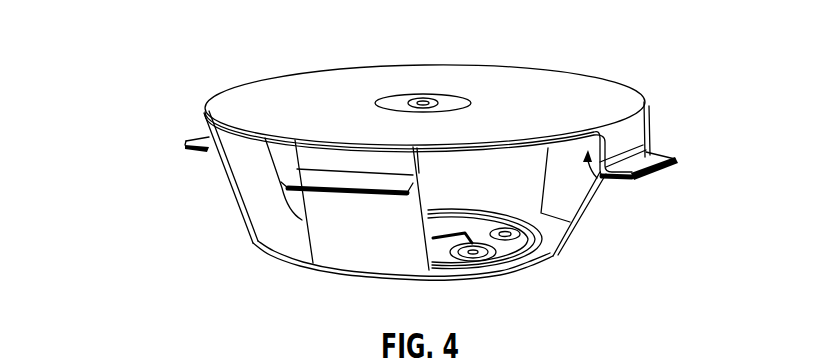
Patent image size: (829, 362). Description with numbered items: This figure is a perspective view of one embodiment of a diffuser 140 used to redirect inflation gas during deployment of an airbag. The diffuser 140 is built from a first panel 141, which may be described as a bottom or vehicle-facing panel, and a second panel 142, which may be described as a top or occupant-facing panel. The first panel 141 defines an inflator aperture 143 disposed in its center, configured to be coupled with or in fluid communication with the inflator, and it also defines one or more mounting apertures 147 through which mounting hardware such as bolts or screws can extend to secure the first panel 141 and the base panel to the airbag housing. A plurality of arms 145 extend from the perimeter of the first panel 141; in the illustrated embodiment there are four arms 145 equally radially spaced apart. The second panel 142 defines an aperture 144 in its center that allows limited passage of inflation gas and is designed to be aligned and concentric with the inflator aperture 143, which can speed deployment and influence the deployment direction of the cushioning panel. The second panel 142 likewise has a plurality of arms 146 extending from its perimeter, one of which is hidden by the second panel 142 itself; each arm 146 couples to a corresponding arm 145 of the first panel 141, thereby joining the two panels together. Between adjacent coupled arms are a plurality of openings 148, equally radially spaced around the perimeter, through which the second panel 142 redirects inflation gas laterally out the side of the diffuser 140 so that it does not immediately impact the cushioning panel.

The diffuser 140 is at (145, 34).
The first panel 141 is at (278, 247).
The second panel 142 is at (277, 92).
The inflator aperture 143 is at (443, 240).
The aperture 144 is at (426, 103).
The arms 145 is at (210, 170).
The arms 146 is at (203, 128).
The mounting apertures 147 is at (472, 253).
The openings 148 is at (164, 211).